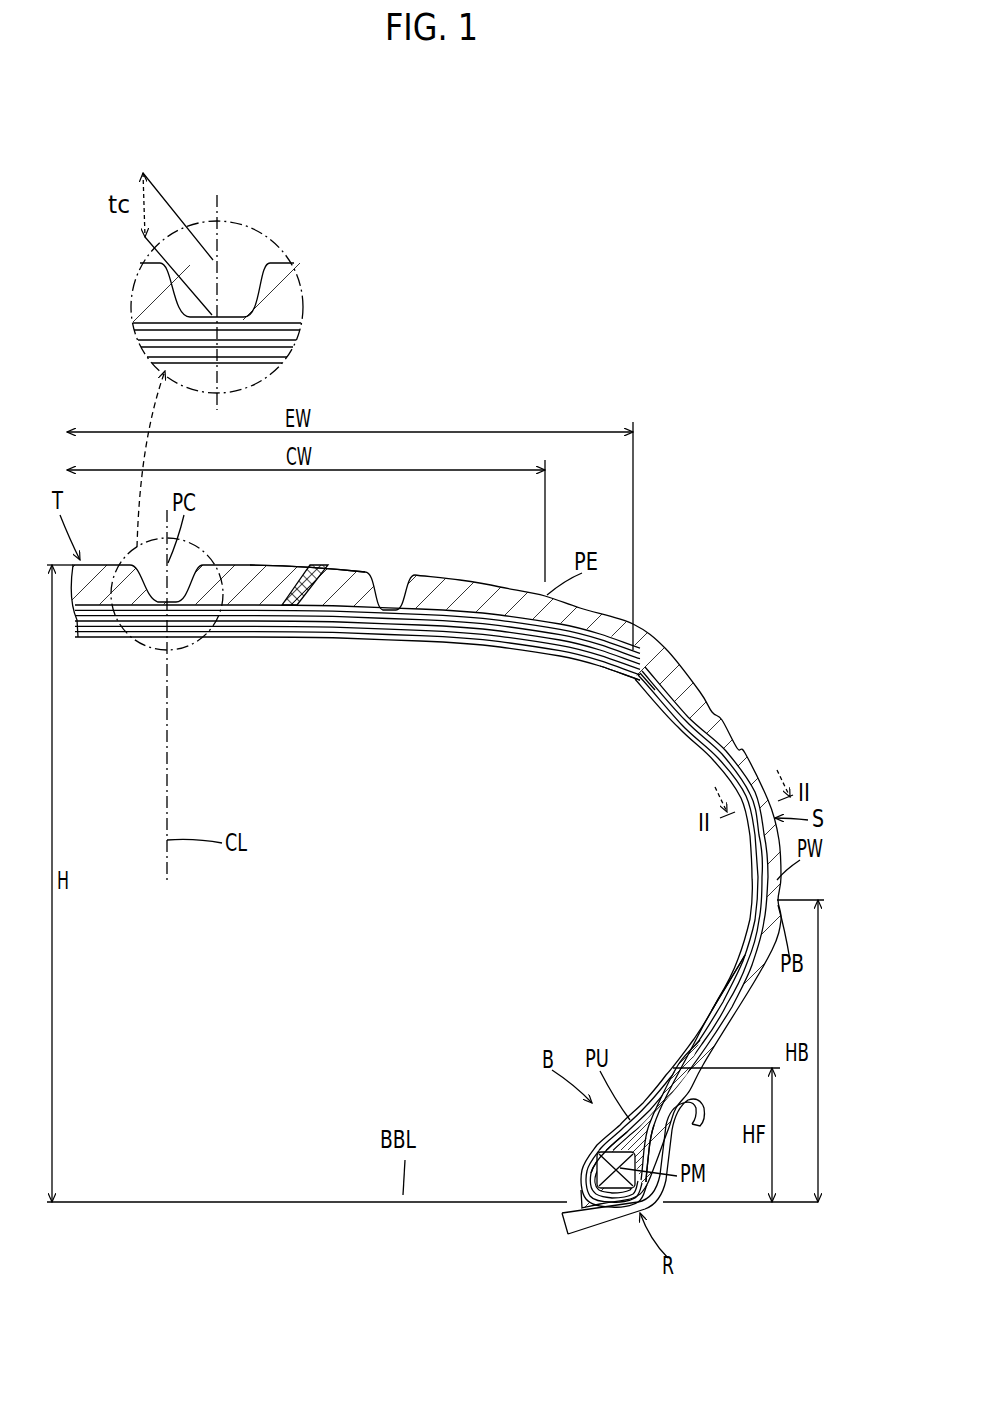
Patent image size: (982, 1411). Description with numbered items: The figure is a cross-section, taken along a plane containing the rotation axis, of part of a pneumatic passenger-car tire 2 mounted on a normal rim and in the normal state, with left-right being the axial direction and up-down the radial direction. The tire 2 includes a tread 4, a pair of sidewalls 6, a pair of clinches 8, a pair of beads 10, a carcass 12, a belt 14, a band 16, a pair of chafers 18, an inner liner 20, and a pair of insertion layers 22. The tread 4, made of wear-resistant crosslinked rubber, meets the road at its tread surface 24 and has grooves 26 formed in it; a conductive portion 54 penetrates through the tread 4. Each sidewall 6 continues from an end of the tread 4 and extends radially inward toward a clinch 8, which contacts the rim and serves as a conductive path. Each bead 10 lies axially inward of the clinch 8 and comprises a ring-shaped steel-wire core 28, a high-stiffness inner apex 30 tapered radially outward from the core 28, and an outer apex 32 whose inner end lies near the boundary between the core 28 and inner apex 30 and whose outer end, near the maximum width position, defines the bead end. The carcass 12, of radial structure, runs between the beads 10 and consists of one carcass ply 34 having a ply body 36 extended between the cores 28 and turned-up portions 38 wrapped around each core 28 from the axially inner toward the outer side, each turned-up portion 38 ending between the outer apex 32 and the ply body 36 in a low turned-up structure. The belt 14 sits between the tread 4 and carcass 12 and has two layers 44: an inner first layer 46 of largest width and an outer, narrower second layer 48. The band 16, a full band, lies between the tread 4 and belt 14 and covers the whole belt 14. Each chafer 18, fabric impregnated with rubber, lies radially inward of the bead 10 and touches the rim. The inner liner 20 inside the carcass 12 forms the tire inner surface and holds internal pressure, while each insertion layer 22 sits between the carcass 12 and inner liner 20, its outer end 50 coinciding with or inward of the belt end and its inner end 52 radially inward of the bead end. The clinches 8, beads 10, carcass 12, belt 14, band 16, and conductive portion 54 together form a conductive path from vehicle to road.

The tire 2 is at (678, 600).
The tread 4 is at (258, 562).
The sidewall 6 is at (748, 768).
The clinch 8 is at (683, 1092).
The bead 10 is at (603, 1125).
The carcass 12 is at (230, 632).
The belt 14 is at (377, 730).
The band 16 is at (447, 612).
The chafer 18 is at (567, 1213).
The inner liner 20 is at (688, 730).
The insertion layer 22 is at (757, 853).
The tread surface 24 is at (293, 564).
The groove 26 is at (190, 575).
The core 28 is at (597, 1170).
The inner apex 30 is at (598, 1137).
The outer apex 32 is at (688, 1050).
The carcass ply 34 is at (487, 934).
The ply body 36 is at (713, 1003).
The turned-up portion 38 is at (650, 1093).
The layer 44 is at (294, 636).
The first layer 46 is at (357, 675).
The second layer 48 is at (346, 636).
The outer end of the insertion layer 50 is at (600, 676).
The inner end of the insertion layer 52 is at (747, 950).
The conductive portion 54 is at (320, 568).